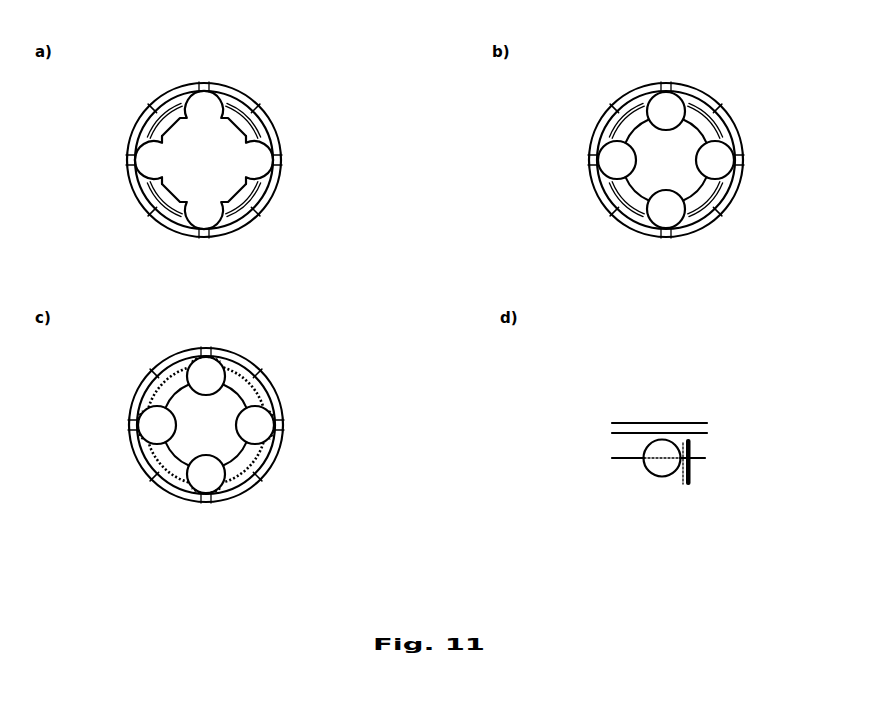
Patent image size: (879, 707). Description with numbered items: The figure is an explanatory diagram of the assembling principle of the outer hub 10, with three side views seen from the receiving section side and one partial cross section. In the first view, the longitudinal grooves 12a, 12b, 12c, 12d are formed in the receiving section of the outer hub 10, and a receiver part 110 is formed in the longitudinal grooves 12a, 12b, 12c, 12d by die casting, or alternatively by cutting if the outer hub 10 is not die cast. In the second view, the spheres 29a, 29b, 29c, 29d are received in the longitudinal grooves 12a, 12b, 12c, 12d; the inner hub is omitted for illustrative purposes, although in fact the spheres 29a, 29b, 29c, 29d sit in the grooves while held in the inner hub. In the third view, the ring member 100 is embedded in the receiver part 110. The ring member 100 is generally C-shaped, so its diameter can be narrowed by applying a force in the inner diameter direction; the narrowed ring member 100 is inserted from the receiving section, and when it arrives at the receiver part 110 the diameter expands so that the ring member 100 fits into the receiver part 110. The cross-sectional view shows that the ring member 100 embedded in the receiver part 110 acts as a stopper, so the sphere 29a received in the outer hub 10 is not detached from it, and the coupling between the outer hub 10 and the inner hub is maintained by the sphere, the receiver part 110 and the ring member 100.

The outer hub 10 is at (257, 91).
The longitudinal groove 12a is at (205, 93).
The longitudinal groove 12b is at (276, 161).
The longitudinal groove 12c is at (205, 230).
The longitudinal groove 12d is at (136, 162).
The sphere 29a is at (657, 108).
The sphere 29b is at (718, 156).
The sphere 29c is at (673, 217).
The sphere 29d is at (603, 166).
The receiver part 110 is at (160, 118).
The ring member 100 is at (692, 466).